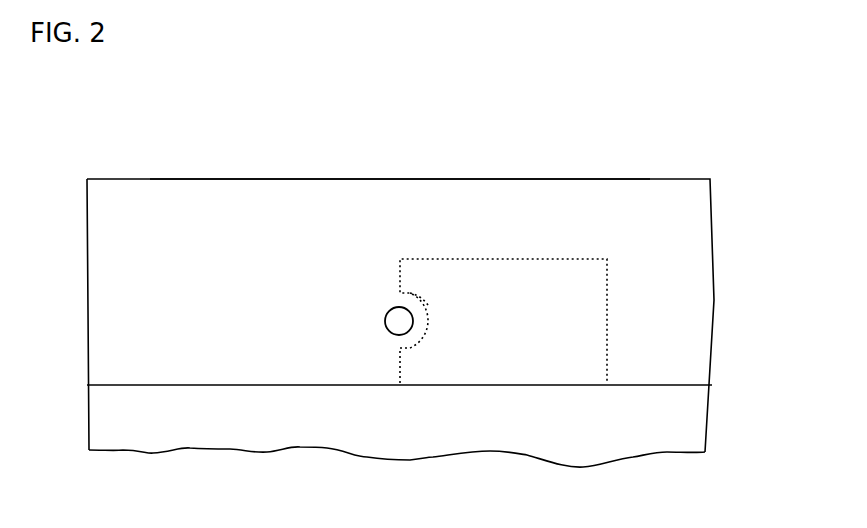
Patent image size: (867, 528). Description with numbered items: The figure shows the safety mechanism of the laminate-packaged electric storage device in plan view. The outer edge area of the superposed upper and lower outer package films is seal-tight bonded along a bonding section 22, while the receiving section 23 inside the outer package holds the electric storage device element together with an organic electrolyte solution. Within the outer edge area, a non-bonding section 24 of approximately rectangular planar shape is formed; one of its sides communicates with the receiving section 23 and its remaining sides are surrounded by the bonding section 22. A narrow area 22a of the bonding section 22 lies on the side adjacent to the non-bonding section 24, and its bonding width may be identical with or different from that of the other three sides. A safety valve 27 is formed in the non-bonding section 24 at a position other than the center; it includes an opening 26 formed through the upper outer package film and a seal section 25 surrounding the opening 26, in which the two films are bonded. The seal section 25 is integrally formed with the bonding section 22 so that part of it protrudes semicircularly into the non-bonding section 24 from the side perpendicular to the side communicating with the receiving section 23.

The bonding section 22 is at (653, 202).
The narrow area 22a is at (507, 207).
The receiving section 23 is at (327, 438).
The non-bonding section 24 is at (550, 257).
The seal section 25 is at (418, 298).
The opening 26 is at (395, 312).
The safety valve 27 is at (406, 286).